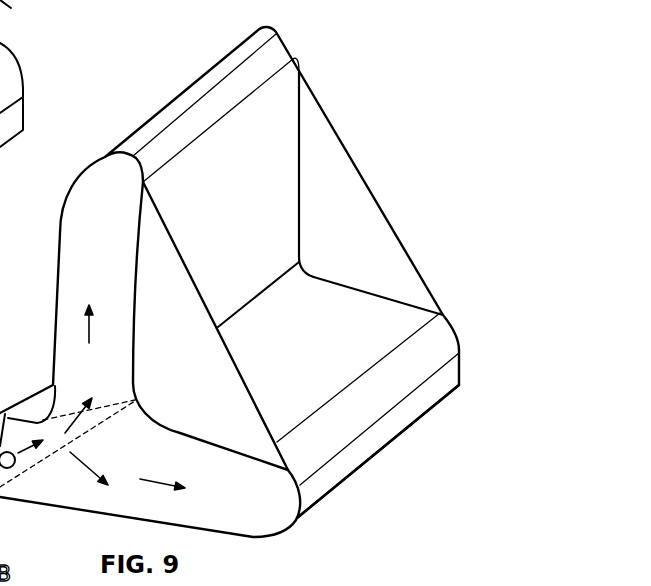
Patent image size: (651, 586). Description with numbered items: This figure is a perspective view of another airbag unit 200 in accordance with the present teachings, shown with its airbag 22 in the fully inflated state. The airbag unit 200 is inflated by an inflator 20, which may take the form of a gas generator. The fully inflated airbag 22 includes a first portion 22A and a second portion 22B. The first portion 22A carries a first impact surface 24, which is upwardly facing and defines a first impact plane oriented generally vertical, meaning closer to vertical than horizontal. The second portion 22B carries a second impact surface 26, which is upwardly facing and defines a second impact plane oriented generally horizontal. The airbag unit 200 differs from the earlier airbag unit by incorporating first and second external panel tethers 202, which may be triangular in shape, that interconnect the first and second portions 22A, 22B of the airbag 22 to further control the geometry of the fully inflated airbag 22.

The airbag unit 200 is at (180, 63).
The airbag 22 is at (358, 477).
The first portion 22A is at (390, 313).
The second portion 22B is at (243, 140).
The first impact surface 24 is at (230, 212).
The second impact surface 26 is at (320, 371).
The panel tethers 202 is at (352, 172).
The inflator 20 is at (15, 464).